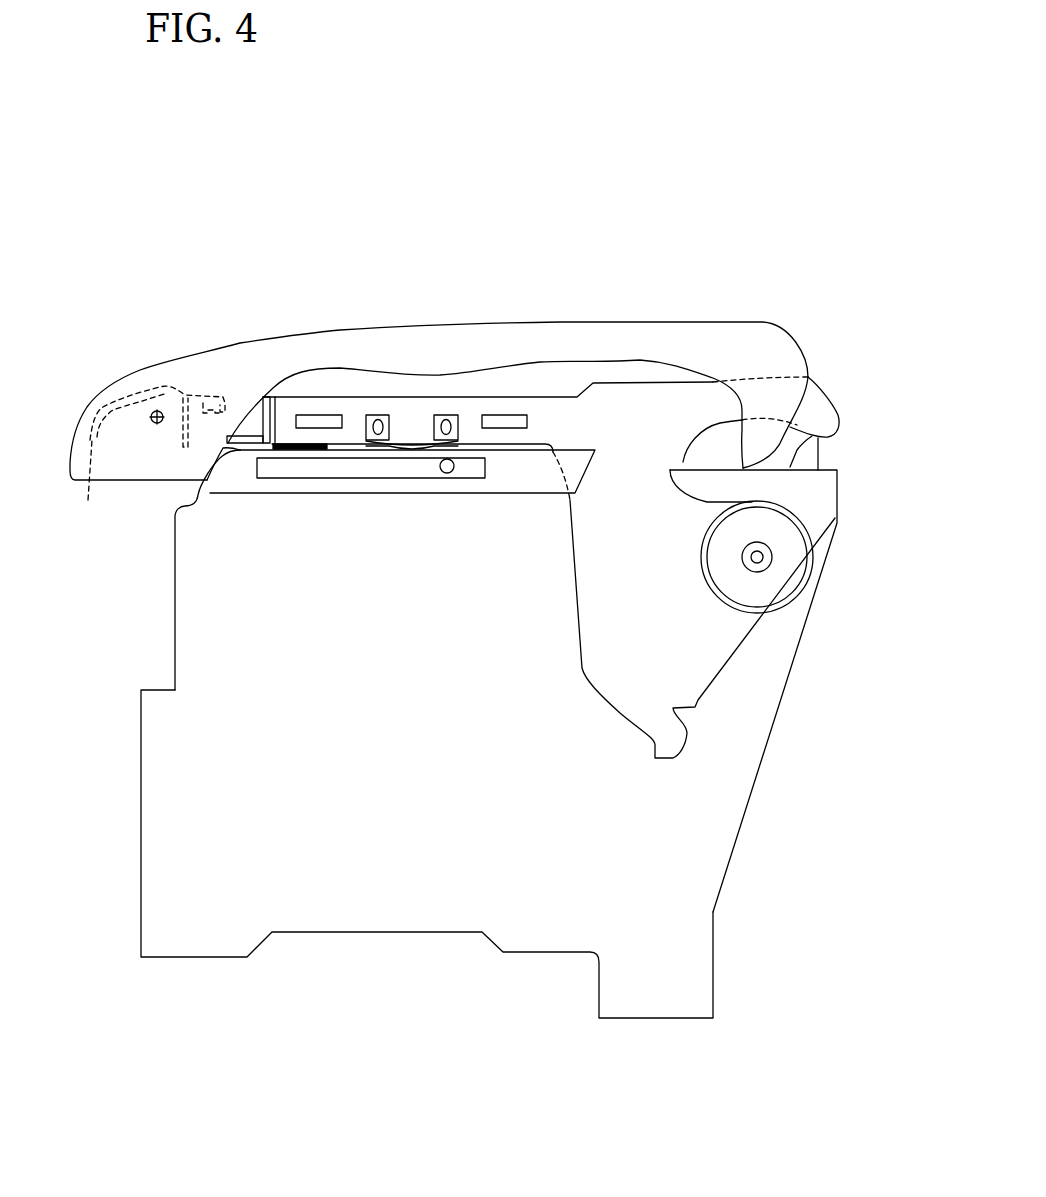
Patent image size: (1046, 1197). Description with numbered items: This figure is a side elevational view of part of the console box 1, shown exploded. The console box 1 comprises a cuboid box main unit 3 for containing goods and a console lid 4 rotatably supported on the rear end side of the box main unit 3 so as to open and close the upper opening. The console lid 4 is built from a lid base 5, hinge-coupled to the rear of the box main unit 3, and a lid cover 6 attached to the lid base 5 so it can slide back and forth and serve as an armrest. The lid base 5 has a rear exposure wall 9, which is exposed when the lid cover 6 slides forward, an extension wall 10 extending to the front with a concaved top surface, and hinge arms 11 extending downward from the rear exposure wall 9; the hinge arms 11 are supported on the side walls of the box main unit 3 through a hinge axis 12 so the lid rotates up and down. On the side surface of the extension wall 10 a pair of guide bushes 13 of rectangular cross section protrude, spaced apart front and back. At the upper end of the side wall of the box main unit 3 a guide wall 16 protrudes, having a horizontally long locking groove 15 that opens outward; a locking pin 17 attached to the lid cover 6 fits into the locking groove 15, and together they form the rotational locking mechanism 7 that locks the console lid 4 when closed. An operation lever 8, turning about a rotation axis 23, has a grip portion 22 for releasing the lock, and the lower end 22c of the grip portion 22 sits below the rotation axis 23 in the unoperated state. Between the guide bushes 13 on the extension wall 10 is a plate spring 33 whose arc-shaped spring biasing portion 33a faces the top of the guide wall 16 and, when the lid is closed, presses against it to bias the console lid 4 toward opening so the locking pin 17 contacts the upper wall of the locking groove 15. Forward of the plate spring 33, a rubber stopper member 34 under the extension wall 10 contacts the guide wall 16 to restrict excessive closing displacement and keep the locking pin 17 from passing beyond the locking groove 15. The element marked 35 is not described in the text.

The console box 1 is at (756, 226).
The box main unit 3 is at (363, 900).
The console lid 4 is at (699, 219).
The lid base 5 is at (627, 370).
The lid cover 6 is at (569, 318).
The rotational locking mechanism 7 is at (126, 582).
The operation lever 8 is at (127, 407).
The rear exposure wall 9 is at (680, 375).
The extension wall 10 is at (326, 395).
The hinge arm 11 is at (700, 655).
The hinge axis 12 is at (758, 557).
The guide bush 13 is at (315, 418).
The locking groove 15 is at (387, 480).
The guide wall 16 is at (228, 443).
The locking pin 17 is at (447, 474).
The grip portion 22 is at (97, 398).
The lower end of grip portion 22c is at (89, 484).
The rotation axis 23 is at (157, 410).
The plate spring 33 is at (378, 398).
The spring biasing portion 33a is at (410, 443).
The stopper member 34 is at (287, 440).
The stopper 35 is at (830, 443).